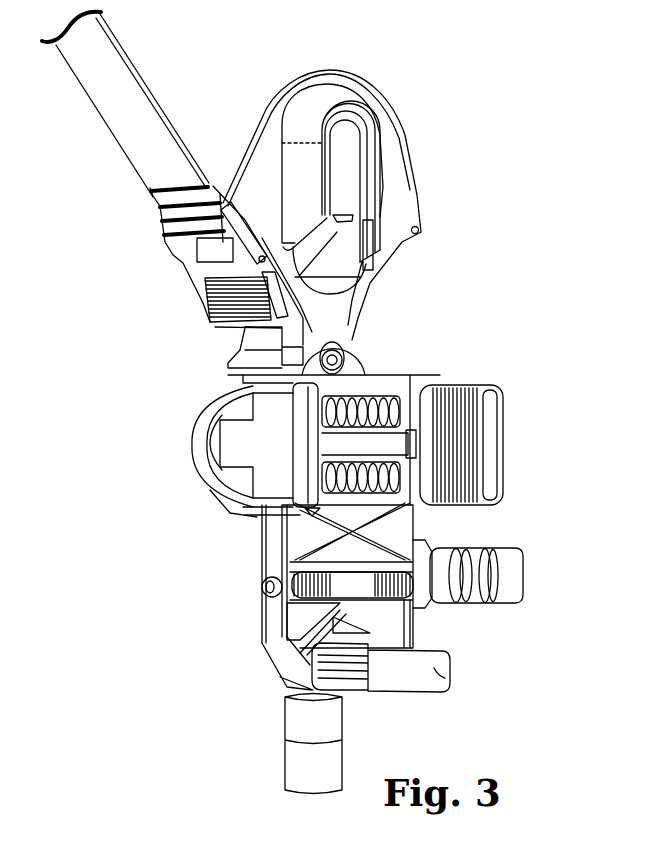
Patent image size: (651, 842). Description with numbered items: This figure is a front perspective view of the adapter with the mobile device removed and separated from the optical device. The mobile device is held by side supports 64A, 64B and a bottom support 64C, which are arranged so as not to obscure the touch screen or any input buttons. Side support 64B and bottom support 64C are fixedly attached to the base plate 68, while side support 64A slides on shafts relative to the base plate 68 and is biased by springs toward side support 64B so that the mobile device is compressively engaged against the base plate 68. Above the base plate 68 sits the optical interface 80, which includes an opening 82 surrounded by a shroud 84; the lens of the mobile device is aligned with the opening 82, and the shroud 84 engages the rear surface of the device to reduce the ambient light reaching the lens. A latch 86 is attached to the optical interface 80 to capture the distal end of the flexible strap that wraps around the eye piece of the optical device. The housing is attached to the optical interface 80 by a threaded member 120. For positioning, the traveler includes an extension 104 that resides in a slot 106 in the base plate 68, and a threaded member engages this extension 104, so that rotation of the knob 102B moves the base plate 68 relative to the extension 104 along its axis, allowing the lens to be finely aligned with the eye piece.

The optical interface 80 is at (387, 150).
The opening 82 is at (343, 190).
The shroud 84 is at (297, 172).
The latch 86 is at (215, 303).
The threaded member 120 is at (342, 358).
The base plate 68 is at (410, 378).
The side support 64A is at (275, 483).
The side support 64B is at (465, 385).
The bottom support 64C is at (445, 680).
The knob 102B is at (520, 568).
The extension 104 is at (347, 583).
The slot 106 is at (430, 595).